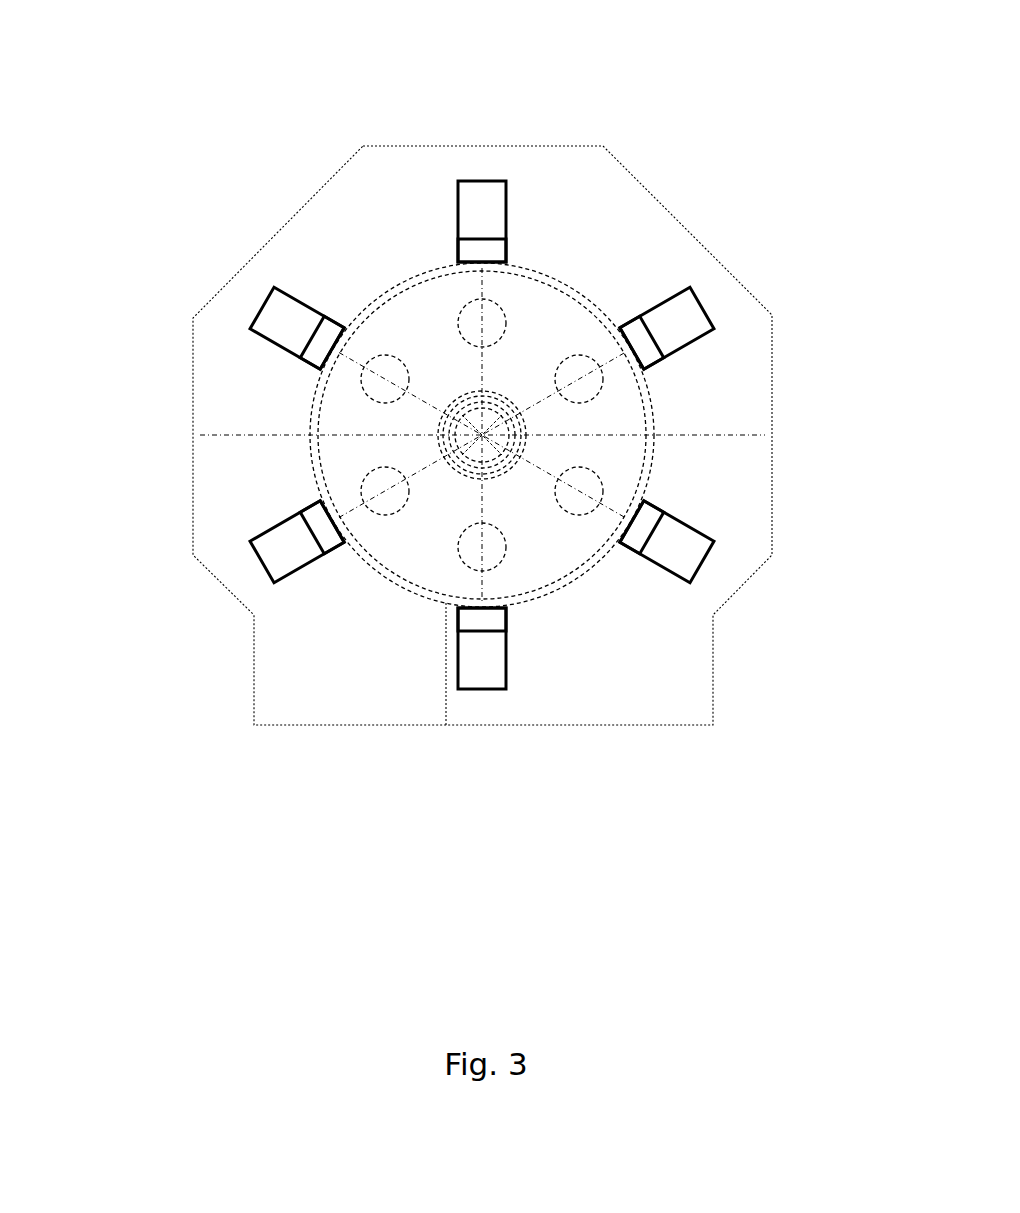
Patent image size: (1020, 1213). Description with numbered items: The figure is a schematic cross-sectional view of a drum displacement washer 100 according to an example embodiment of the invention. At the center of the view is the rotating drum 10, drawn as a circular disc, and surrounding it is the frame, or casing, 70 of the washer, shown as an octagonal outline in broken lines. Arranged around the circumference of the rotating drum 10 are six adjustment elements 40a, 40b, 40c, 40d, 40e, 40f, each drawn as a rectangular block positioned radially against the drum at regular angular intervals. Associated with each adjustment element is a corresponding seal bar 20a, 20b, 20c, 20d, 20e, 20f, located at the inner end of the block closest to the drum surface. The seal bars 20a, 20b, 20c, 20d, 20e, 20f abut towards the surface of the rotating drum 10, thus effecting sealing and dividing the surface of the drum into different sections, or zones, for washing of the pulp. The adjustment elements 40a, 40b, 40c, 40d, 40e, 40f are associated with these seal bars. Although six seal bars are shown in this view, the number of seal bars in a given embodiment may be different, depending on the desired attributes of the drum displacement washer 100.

The drum displacement washer 100 is at (335, 37).
The frame 70 is at (304, 197).
The rotating drum 10 is at (598, 306).
The adjustment element 40a is at (260, 312).
The adjustment element 40b is at (483, 180).
The adjustment element 40c is at (706, 305).
The adjustment element 40d is at (707, 567).
The adjustment element 40e is at (483, 691).
The adjustment element 40f is at (258, 562).
The seal bar 20a is at (322, 352).
The seal bar 20b is at (490, 252).
The seal bar 20c is at (636, 340).
The seal bar 20d is at (638, 530).
The seal bar 20e is at (488, 618).
The seal bar 20f is at (330, 535).